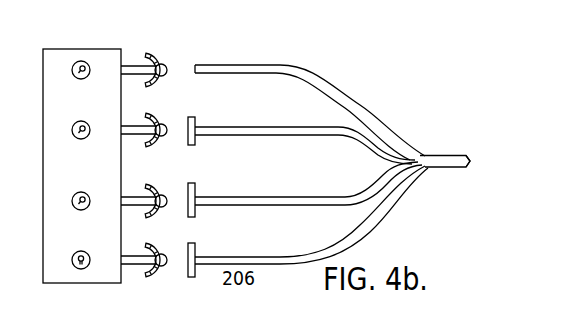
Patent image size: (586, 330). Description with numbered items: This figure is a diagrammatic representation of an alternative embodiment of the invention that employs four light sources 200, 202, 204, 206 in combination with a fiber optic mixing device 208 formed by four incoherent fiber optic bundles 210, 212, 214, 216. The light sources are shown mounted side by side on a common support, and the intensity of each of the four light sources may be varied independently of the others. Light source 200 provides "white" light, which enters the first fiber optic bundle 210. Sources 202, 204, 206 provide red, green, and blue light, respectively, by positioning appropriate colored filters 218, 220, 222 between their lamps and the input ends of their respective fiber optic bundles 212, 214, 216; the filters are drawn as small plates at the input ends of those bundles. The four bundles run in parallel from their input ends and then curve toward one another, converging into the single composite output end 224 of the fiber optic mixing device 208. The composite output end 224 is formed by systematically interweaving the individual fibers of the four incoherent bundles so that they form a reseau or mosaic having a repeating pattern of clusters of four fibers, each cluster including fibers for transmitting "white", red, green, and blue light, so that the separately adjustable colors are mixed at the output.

The light source 200 is at (148, 43).
The light source 202 is at (140, 118).
The light source 204 is at (142, 187).
The light source 206 is at (140, 250).
The fiber optic mixing device 208 is at (415, 142).
The fiber optic bundle 210 is at (257, 67).
The fiber optic bundle 212 is at (253, 127).
The fiber optic bundle 214 is at (250, 197).
The fiber optic bundle 216 is at (237, 257).
The colored filter 218 is at (195, 117).
The colored filter 220 is at (195, 185).
The colored filter 222 is at (195, 245).
The composite output end 224 is at (471, 147).